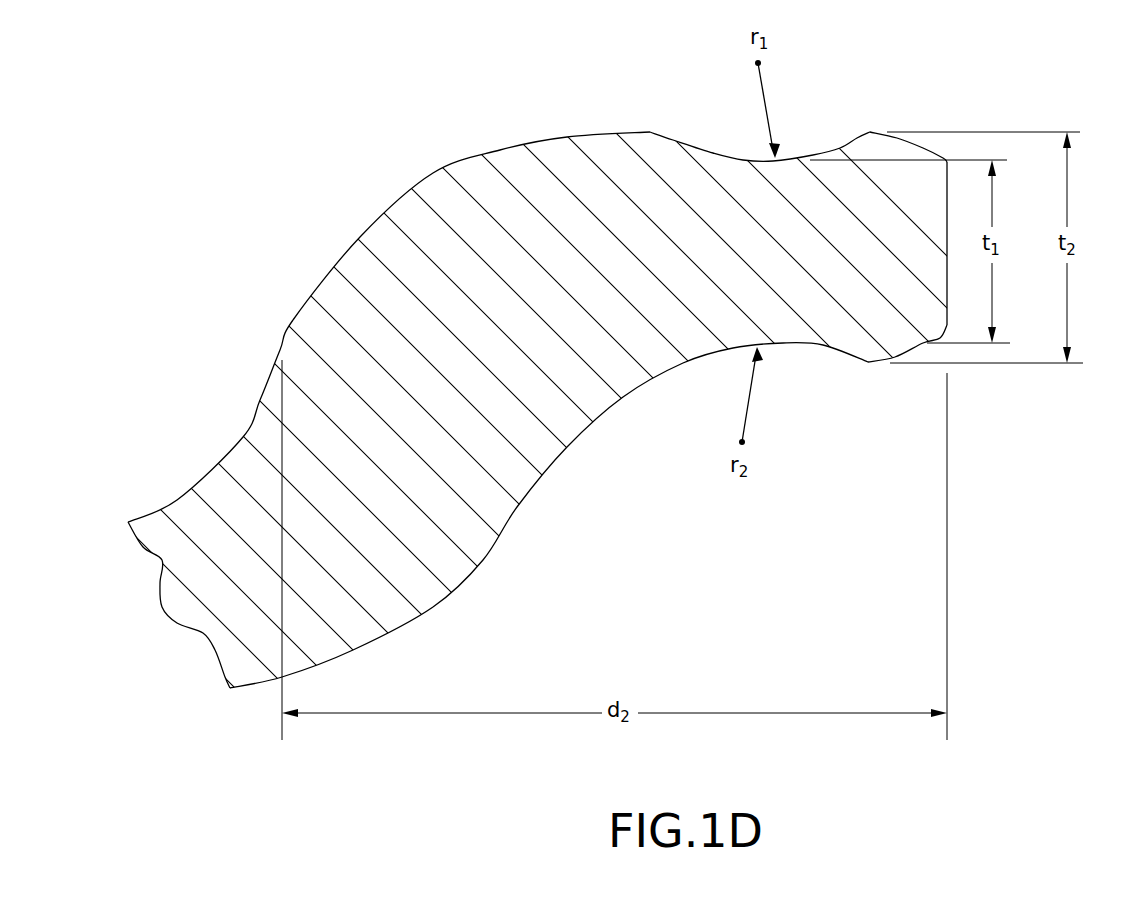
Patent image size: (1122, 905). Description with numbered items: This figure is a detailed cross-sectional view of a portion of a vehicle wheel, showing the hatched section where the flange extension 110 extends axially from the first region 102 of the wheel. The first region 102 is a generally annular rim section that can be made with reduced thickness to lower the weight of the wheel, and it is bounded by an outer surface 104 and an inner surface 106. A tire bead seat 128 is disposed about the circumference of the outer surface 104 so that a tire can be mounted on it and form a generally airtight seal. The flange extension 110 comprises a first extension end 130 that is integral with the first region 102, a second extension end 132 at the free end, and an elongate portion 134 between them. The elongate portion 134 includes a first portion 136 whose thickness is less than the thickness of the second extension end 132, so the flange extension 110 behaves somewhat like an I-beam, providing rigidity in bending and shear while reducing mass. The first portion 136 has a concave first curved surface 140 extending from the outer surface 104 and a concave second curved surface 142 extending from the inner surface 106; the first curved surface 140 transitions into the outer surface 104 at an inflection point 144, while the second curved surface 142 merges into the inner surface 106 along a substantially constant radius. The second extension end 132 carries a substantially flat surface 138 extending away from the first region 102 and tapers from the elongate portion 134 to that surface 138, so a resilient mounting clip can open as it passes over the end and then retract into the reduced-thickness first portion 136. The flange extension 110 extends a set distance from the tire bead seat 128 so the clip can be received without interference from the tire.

The first region 102 is at (190, 575).
The outer surface 104 is at (176, 508).
The inner surface 106 is at (247, 684).
The flange extension 110 is at (893, 150).
The tire bead seat 128 is at (295, 320).
The first extension end 130 is at (625, 160).
The second extension end 132 is at (943, 158).
The elongate portion 134 is at (710, 263).
The first portion 136 is at (733, 223).
The surface 138 is at (948, 307).
The first curved surface 140 is at (840, 147).
The second curved surface 142 is at (827, 347).
The inflection point 144 is at (277, 352).